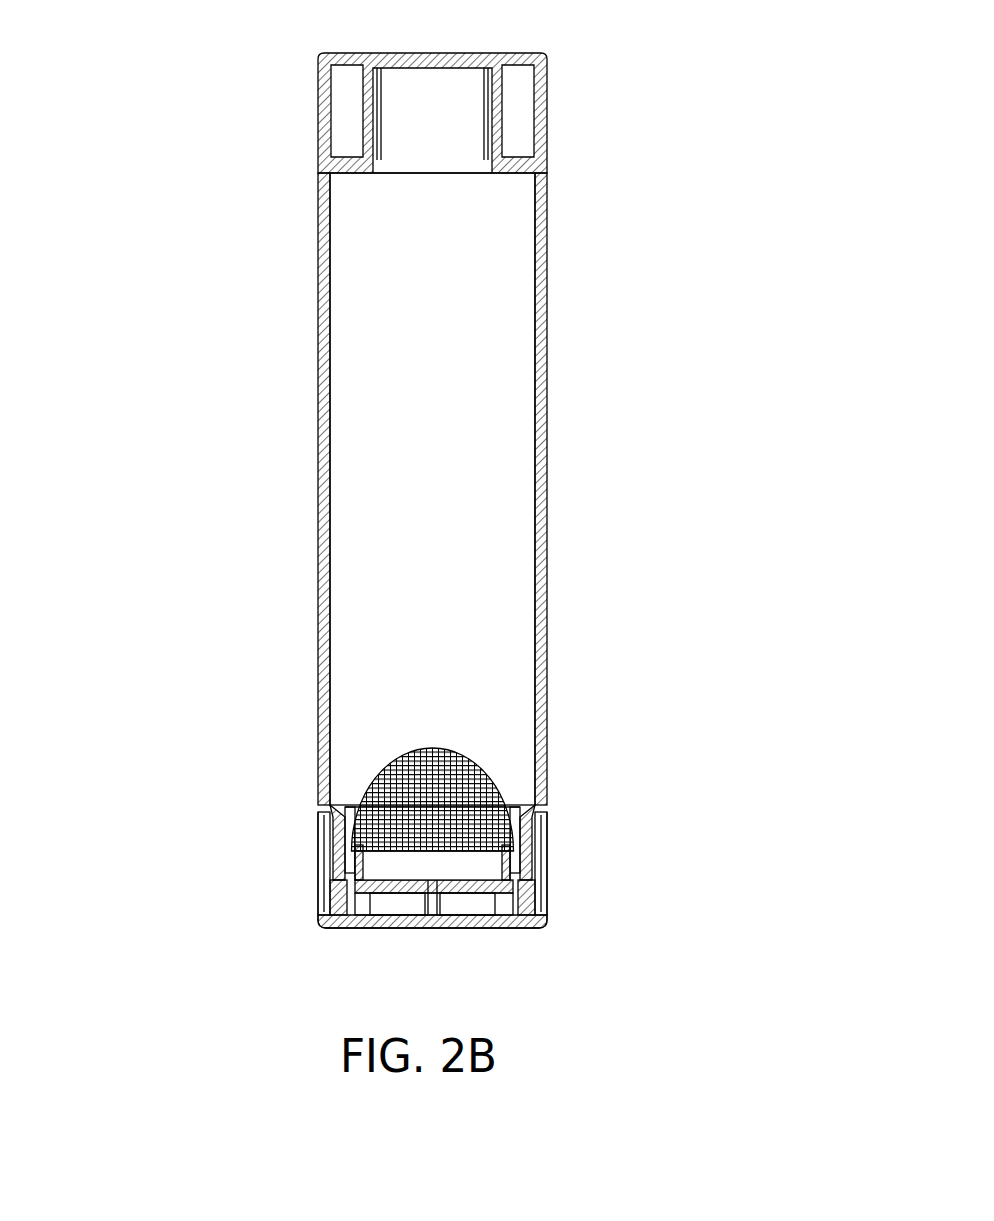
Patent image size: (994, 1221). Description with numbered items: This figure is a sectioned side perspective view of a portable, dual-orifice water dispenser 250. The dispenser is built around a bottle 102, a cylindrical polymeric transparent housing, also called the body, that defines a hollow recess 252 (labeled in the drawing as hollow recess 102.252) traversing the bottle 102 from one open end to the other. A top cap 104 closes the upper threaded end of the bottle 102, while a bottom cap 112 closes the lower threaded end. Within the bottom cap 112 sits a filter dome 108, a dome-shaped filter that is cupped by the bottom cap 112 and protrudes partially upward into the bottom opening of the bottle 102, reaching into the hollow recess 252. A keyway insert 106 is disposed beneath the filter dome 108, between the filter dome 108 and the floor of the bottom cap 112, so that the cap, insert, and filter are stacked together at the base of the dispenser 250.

The portable, dual-orifice water dispenser 250 is at (122, 161).
The top cap 104 is at (513, 117).
The bottle 102 is at (485, 329).
The hollow recess 252 is at (323, 489).
The hollow recess 102.252 is at (393, 494).
The filter dome 108 is at (482, 773).
The keyway insert 106 is at (383, 907).
The bottom cap 112 is at (543, 888).